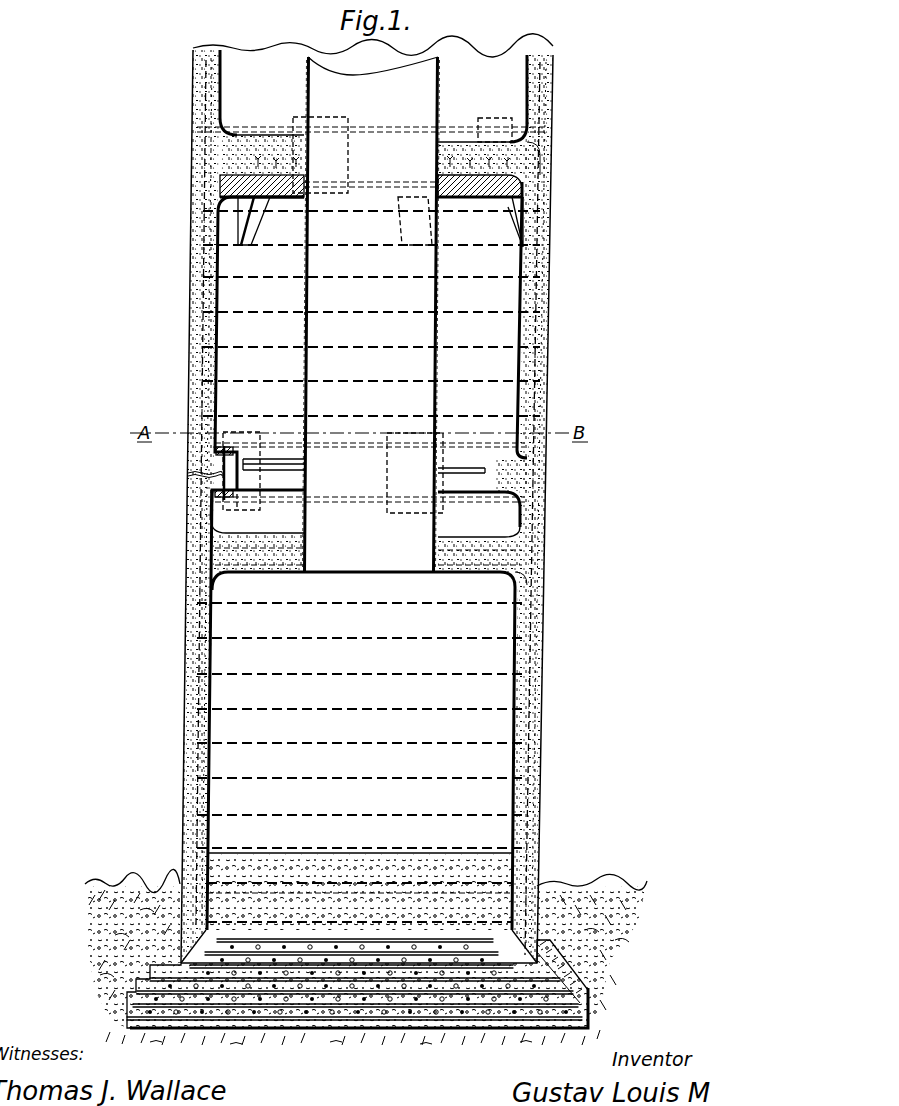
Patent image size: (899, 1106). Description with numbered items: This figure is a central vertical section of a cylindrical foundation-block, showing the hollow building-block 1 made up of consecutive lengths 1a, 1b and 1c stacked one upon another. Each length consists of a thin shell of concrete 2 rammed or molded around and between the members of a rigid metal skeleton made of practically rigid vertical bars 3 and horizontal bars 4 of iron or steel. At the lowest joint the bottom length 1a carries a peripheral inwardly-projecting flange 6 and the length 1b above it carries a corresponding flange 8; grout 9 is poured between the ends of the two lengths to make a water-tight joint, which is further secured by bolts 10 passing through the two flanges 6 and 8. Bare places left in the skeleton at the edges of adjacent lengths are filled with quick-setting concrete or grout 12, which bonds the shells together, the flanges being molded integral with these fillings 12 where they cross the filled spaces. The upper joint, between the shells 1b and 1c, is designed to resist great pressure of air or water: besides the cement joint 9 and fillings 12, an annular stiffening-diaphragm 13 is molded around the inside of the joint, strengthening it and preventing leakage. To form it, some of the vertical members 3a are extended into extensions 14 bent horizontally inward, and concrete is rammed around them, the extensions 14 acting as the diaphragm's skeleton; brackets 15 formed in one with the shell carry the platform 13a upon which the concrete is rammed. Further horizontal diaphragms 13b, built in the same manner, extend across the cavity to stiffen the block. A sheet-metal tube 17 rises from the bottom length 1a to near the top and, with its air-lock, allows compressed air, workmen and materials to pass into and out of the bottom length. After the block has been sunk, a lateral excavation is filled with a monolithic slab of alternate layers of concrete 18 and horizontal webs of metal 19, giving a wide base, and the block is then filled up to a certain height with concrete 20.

The hollow building-block 1 is at (184, 620).
The bottom length 1a is at (361, 710).
The middle length 1b is at (371, 343).
The upper length 1c is at (372, 96).
The shell of concrete 2 is at (193, 103).
The vertical bars 3 is at (553, 84).
The vertical members 3a is at (558, 105).
The horizontal bars 4 is at (446, 712).
The peripheral inwardly-projecting flange 6 is at (246, 500).
The flange 8 is at (238, 446).
The grout 9 is at (190, 474).
The bolts 10 is at (215, 487).
The concrete fillings 12 is at (194, 160).
The annular stiffening-diaphragm 13 is at (546, 133).
The platform 13a is at (462, 200).
The horizontal diaphragms 13b is at (510, 586).
The extensions 14 is at (262, 136).
The brackets 15 is at (257, 241).
The sheet-metal tube 17 is at (436, 297).
The layers of concrete 18 is at (133, 964).
The horizontal frameworks or webs of metal 19 is at (322, 1010).
The concrete filling 20 is at (385, 866).